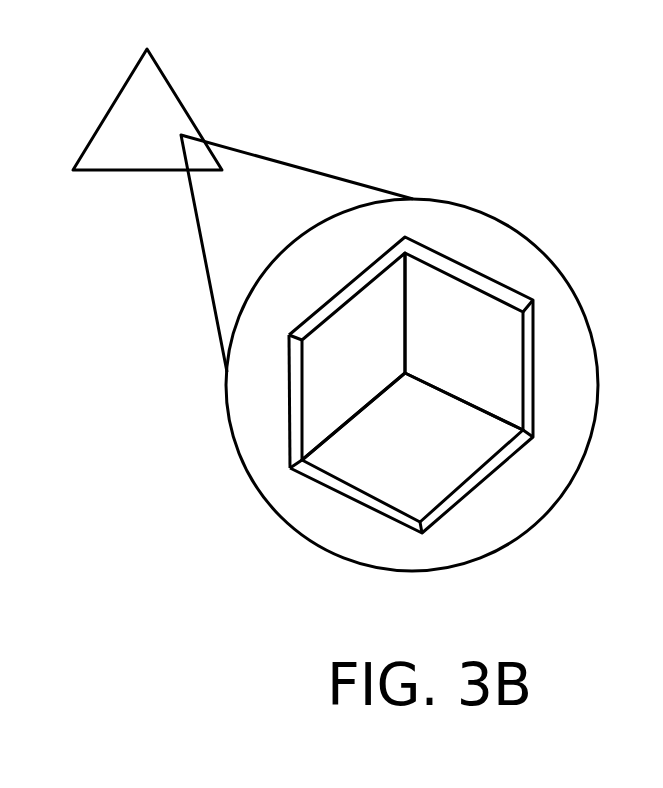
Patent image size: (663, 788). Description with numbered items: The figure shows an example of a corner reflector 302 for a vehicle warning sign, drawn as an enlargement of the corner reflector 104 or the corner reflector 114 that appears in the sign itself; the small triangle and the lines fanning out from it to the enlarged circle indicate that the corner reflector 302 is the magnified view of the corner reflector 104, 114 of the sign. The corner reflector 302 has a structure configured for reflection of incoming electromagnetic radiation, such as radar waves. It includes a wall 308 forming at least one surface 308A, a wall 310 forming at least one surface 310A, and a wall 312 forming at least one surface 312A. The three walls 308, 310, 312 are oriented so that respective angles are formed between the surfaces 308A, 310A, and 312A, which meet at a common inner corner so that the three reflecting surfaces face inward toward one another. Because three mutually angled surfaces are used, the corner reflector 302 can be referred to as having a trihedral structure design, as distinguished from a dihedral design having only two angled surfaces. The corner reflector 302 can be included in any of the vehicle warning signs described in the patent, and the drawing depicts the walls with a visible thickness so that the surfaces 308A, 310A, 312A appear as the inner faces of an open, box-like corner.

The corner reflector 104 is at (160, 92).
The corner reflector 114 is at (207, 42).
The corner reflector 302 is at (457, 235).
The wall 308 is at (284, 360).
The surface 308A is at (353, 356).
The wall 310 is at (412, 491).
The surface 310A is at (440, 455).
The wall 312 is at (480, 272).
The surface 312A is at (490, 353).